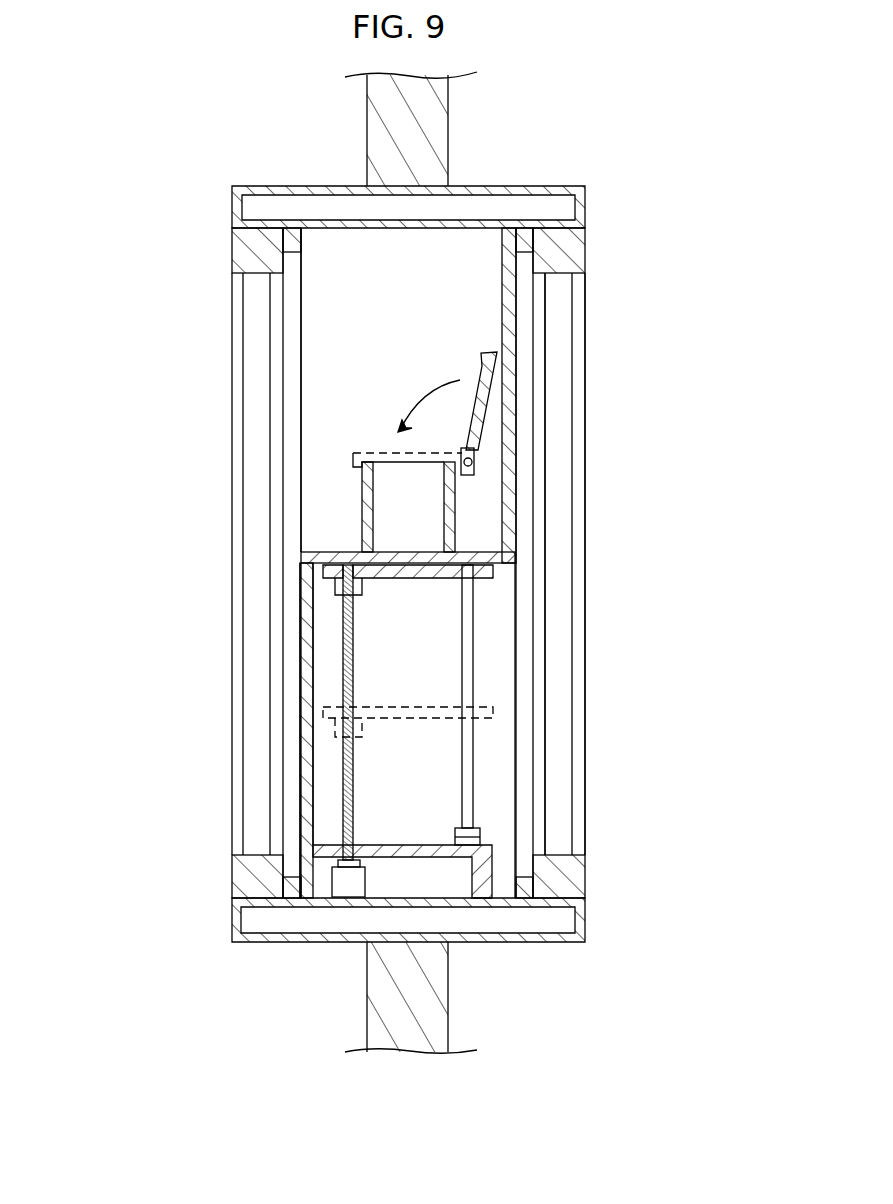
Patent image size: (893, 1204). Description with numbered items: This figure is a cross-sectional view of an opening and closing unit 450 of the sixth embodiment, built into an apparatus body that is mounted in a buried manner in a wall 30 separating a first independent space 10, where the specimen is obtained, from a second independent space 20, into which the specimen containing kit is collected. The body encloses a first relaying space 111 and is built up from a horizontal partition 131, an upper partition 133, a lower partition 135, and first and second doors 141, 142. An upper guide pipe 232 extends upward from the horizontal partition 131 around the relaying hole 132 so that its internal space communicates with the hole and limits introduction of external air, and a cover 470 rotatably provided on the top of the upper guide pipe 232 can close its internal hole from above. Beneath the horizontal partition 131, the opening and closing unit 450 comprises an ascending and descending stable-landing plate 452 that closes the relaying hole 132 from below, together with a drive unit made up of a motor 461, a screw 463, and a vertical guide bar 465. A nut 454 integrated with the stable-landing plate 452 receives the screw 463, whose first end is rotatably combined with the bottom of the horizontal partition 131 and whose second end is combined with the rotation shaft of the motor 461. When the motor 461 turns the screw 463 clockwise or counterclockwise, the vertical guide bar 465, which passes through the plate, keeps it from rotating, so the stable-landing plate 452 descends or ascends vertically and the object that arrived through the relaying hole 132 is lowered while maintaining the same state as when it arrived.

The first independent space 10 is at (108, 517).
The second independent space 20 is at (727, 515).
The wall 30 is at (437, 120).
The first relaying space 111 is at (347, 365).
The horizontal partition 131 is at (328, 552).
The relaying hole 132 is at (398, 557).
The upper partition 133 is at (508, 350).
The lower partition 135 is at (305, 728).
The first door 141 is at (263, 422).
The second door 142 is at (558, 392).
The upper guide pipe 232 is at (447, 522).
The opening and closing unit 450 is at (485, 675).
The ascending and descending stable-landing plate 452 is at (487, 578).
The nut 454 is at (360, 593).
The motor 461 is at (330, 897).
The screw 463 is at (343, 793).
The vertical guide bar 465 is at (463, 737).
The cover 470 is at (485, 425).